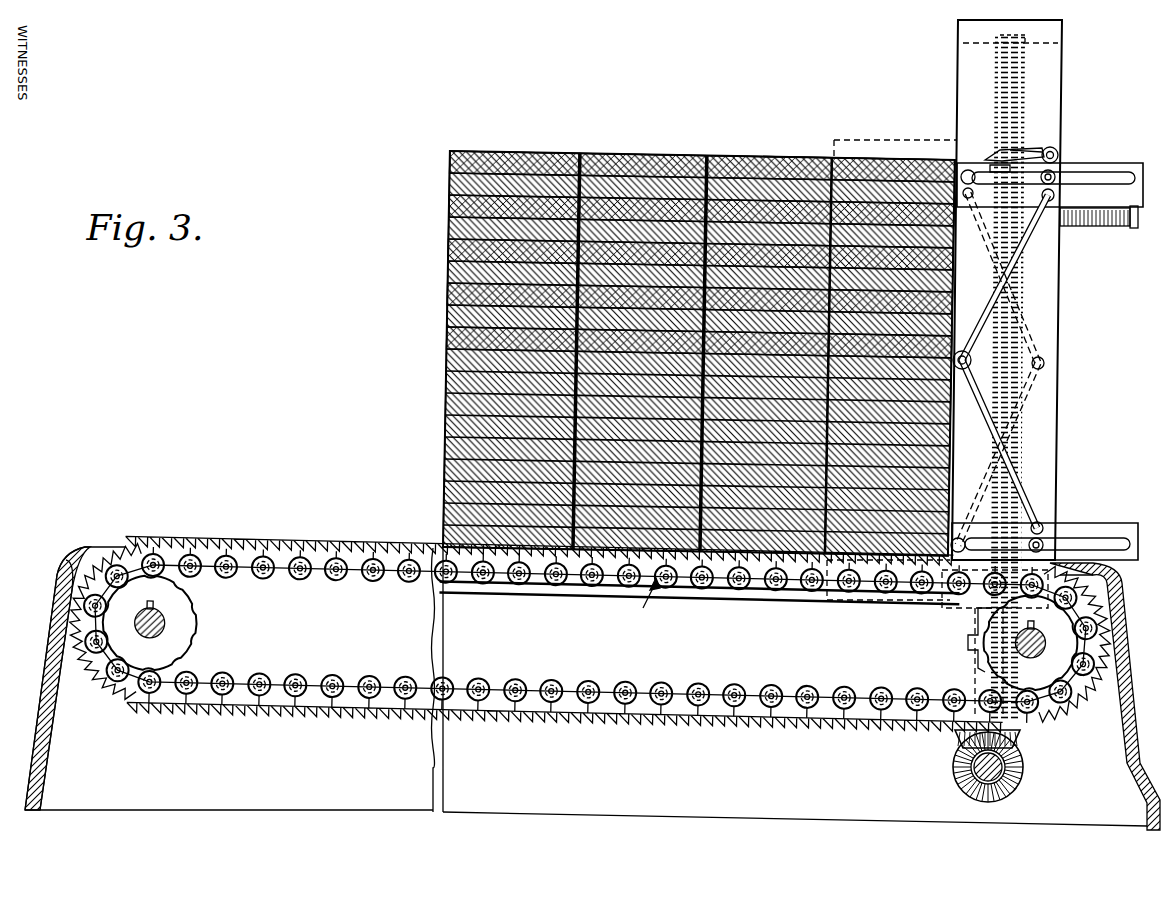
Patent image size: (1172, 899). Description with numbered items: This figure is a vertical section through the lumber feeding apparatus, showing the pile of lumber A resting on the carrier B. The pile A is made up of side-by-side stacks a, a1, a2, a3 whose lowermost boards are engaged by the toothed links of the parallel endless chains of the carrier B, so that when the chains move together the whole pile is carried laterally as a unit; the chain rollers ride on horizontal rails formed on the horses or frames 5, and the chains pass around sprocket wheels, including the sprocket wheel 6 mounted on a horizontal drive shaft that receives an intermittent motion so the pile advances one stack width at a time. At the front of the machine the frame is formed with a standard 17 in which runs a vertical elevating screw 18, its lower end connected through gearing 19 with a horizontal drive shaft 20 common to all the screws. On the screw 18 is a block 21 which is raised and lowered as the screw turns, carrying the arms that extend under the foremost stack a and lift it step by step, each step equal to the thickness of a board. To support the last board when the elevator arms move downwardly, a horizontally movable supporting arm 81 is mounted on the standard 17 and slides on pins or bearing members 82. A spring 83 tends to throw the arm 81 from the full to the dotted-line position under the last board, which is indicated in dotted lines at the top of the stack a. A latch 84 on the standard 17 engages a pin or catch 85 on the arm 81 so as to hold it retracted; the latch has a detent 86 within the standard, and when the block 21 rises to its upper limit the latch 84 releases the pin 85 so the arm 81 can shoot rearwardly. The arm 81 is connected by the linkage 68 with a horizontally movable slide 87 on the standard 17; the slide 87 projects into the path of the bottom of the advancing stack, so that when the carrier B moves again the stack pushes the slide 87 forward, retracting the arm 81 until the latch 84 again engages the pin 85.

The horses or frames 5 is at (85, 563).
The sprocket wheel 6 is at (985, 668).
The standards 17 is at (1045, 305).
The vertical elevating screw 18 is at (1030, 100).
The gearing 19 is at (1020, 745).
The horizontal drive shaft 20 is at (965, 776).
The block 21 is at (960, 612).
The lazy-tongs links 68 is at (1025, 410).
The supporting arms 81 is at (1100, 170).
The pins or bearing members 82 is at (1058, 192).
The spring 83 is at (1100, 228).
The latch 84 is at (1000, 160).
The pin or catch 85 is at (1022, 150).
The detent 86 is at (1060, 152).
The slide 87 is at (1058, 532).
The pile of lumber A is at (681, 342).
The stack a is at (876, 167).
The stack a1 is at (744, 166).
The stack a2 is at (668, 160).
The stack a3 is at (548, 150).
The carrier B is at (640, 612).